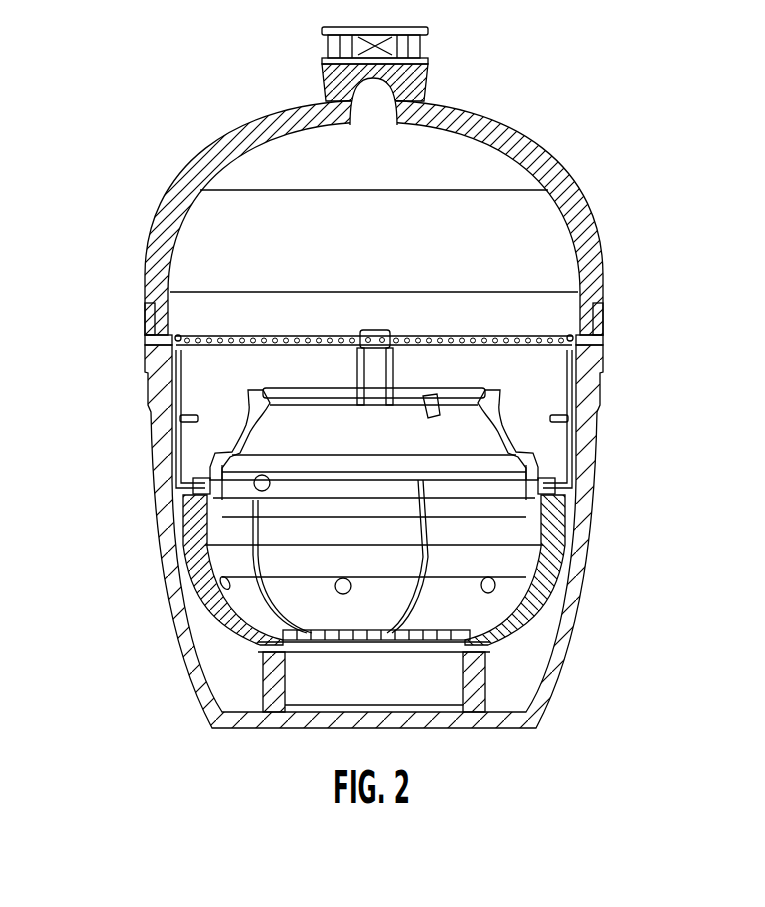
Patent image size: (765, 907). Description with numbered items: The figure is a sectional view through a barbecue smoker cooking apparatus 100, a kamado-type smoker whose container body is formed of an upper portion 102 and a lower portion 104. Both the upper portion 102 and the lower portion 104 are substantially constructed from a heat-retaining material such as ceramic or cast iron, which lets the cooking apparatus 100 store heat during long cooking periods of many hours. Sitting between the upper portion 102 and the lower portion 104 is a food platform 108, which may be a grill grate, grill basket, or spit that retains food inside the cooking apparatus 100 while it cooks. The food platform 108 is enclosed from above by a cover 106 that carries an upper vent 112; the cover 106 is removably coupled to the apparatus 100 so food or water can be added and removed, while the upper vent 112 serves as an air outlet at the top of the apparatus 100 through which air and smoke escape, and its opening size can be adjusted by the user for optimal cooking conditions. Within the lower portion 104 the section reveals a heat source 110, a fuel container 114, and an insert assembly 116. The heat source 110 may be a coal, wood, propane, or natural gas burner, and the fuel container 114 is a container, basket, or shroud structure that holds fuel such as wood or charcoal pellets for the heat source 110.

The barbecue smoker cooking apparatus 100 is at (130, 77).
The upper portion 102 is at (588, 102).
The lower portion 104 is at (94, 544).
The cover 106 is at (180, 200).
The food platform 108 is at (555, 338).
The heat source 110 is at (487, 667).
The upper vent 112 is at (417, 43).
The fuel container 114 is at (557, 538).
The insert assembly 116 is at (245, 437).